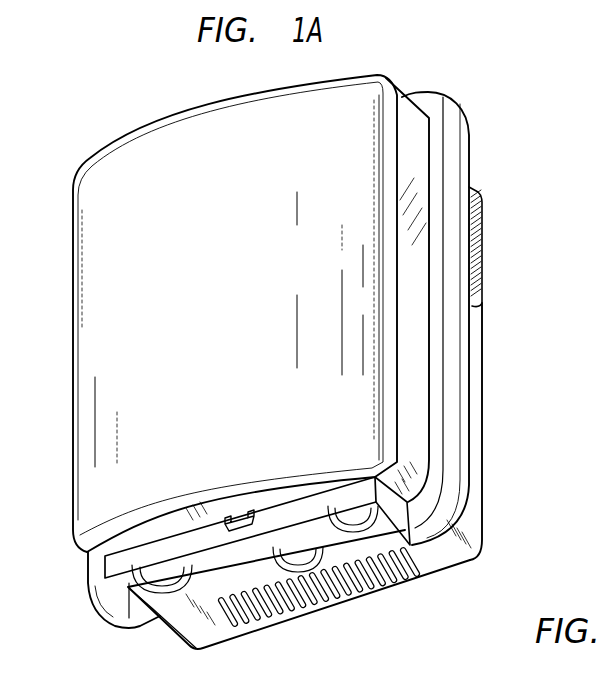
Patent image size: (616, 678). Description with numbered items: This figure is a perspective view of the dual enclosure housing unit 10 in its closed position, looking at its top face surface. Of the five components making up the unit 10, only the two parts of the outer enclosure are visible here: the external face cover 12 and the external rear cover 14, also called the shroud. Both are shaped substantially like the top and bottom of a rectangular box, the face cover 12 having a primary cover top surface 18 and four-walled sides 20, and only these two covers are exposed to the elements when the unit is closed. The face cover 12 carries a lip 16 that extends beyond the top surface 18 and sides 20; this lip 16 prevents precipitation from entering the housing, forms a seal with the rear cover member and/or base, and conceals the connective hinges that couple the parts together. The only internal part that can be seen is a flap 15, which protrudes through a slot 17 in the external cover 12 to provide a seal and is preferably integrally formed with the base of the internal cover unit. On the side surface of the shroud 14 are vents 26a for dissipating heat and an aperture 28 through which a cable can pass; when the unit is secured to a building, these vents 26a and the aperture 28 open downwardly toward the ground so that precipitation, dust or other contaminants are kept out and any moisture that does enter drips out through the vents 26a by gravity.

The housing unit 10 is at (556, 273).
The external face cover 12 is at (362, 127).
The external rear cover 14 is at (464, 549).
The flap 15 is at (223, 531).
The lip 16 is at (460, 331).
The slot 17 is at (252, 512).
The cover top surface 18 is at (105, 333).
The sides 20 is at (413, 430).
The vents 26a is at (372, 573).
The aperture 28 is at (308, 557).